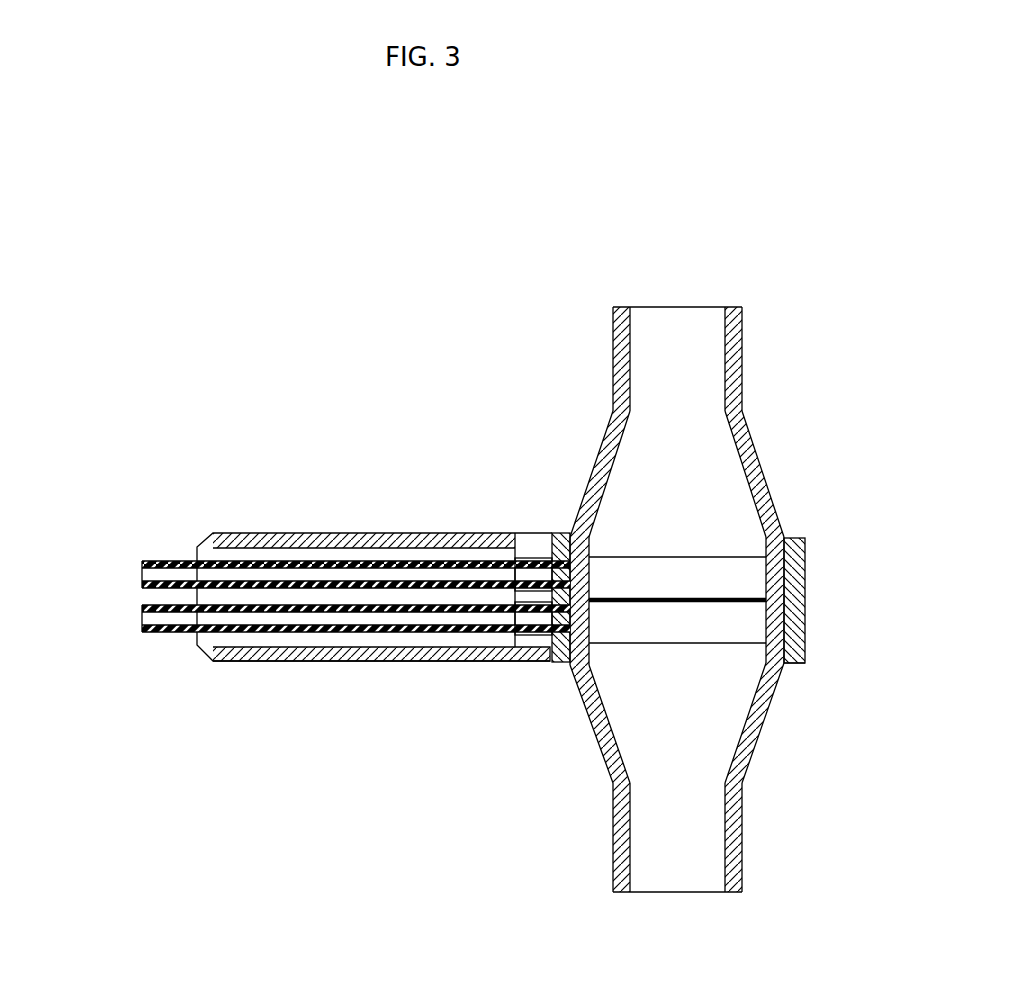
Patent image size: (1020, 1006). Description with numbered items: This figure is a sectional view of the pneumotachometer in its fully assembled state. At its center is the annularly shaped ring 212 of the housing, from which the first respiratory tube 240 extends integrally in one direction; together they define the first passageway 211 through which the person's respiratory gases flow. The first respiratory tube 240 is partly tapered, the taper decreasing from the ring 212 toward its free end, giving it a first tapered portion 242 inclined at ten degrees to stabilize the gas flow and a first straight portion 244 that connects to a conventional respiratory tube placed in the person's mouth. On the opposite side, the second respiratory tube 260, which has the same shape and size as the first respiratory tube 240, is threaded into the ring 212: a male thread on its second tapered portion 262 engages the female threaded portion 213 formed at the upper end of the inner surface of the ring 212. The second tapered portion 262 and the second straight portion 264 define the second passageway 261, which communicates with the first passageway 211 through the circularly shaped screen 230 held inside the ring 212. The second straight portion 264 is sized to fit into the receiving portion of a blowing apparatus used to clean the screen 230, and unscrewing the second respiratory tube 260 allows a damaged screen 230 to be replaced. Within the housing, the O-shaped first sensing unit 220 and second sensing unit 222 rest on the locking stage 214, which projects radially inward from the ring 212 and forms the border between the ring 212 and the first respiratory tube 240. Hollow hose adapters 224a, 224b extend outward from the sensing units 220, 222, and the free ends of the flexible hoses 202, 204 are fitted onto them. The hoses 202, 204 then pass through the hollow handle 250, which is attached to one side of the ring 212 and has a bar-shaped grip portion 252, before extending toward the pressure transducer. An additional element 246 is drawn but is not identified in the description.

The flexible hose 202 is at (155, 565).
The flexible hose 204 is at (155, 627).
The first passageway 211 is at (678, 867).
The annularly shaped ring 212 is at (808, 585).
The female threaded portion 213 is at (787, 537).
The locking stage 214 is at (792, 665).
The first sensing unit 220 is at (680, 637).
The second sensing unit 222 is at (680, 573).
The hose adapter 224a is at (520, 630).
The hose adapter 224b is at (520, 560).
The screen 230 is at (605, 593).
The first respiratory tube 240 is at (731, 815).
The first tapered portion 242 is at (762, 720).
The first straight portion 244 is at (740, 862).
The connector block 246 is at (573, 535).
The handle 250 is at (374, 568).
The grip portion 252 is at (265, 658).
The second respiratory tube 260 is at (664, 382).
The second passageway 261 is at (637, 278).
The second tapered portion 262 is at (758, 440).
The second straight portion 264 is at (742, 333).